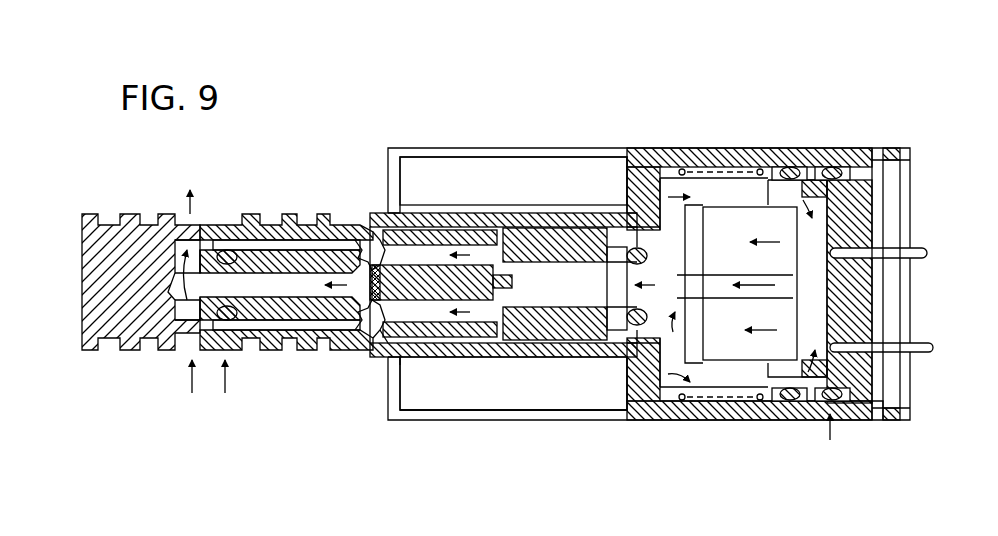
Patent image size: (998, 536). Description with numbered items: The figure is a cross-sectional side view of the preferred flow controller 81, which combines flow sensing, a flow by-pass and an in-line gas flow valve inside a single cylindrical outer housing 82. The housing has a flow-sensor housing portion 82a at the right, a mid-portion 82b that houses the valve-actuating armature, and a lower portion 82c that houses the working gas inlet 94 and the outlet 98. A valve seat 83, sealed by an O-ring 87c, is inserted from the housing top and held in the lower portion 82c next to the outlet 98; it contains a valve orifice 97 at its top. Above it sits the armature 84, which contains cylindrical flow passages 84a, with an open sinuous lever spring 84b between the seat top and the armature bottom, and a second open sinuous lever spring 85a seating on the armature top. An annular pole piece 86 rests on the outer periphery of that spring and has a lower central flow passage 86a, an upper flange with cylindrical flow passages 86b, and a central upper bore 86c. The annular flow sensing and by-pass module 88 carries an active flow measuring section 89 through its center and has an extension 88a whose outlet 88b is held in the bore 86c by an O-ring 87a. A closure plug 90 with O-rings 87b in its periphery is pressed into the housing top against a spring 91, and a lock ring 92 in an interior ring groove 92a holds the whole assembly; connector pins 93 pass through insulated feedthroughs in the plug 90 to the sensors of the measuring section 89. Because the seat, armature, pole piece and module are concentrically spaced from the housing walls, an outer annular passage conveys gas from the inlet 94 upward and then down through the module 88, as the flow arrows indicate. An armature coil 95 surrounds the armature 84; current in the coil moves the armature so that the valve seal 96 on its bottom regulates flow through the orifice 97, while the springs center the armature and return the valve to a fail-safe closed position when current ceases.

The flow controller 81 is at (833, 453).
The outer housing 82 is at (693, 147).
The flow-sensor housing portion 82a is at (753, 410).
The mid-portion 82b is at (550, 395).
The lower portion 82c is at (323, 347).
The valve seat 83 is at (320, 258).
The armature 84 is at (428, 325).
The cylindrical flow passages 84a is at (428, 257).
The open sinuous lever spring 84b is at (385, 338).
The second open sinuous lever spring 85a is at (503, 330).
The annular pole piece 86 is at (523, 233).
The lower central flow passage 86a is at (555, 268).
The cylindrical flow passages 86b is at (632, 205).
The central upper bore 86c is at (585, 268).
The O-ring 87a is at (645, 338).
The O-rings 87b is at (793, 400).
The O-ring 87c is at (190, 340).
The annular flow sensing and by-pass module 88 is at (753, 213).
The extension 88a is at (685, 337).
The outlet 88b is at (600, 297).
The active flow measuring section 89 is at (713, 287).
The closure plug 90 is at (852, 167).
The spring 91 is at (752, 167).
The lock ring 92 is at (880, 385).
The interior ring groove 92a is at (862, 413).
The connector pins 93 is at (925, 250).
The working gas inlet 94 is at (183, 337).
The armature coil 95 is at (513, 283).
The valve seal 96 is at (372, 252).
The valve orifice 97 is at (343, 292).
The outlet 98 is at (190, 236).